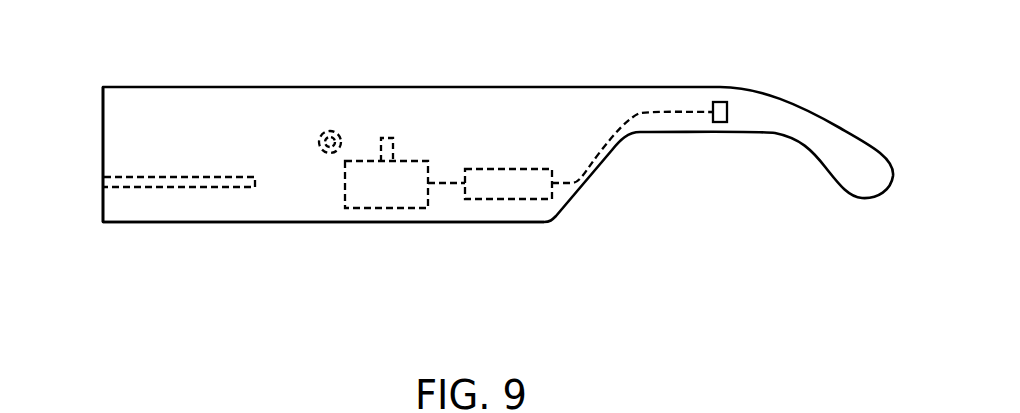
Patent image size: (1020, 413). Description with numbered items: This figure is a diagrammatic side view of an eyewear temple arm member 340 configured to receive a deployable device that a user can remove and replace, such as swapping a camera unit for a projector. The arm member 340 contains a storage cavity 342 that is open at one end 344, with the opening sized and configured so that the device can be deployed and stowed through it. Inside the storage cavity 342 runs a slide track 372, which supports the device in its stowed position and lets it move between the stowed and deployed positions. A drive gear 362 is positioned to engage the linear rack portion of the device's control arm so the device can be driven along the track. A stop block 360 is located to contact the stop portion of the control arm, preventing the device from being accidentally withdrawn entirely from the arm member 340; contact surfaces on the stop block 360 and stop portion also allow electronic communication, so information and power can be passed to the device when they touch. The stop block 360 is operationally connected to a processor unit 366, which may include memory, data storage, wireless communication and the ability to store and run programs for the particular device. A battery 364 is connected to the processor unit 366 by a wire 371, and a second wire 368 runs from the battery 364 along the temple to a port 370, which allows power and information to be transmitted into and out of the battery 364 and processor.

The arm member 340 is at (261, 87).
The open end 344 is at (103, 133).
The storage cavity 342 is at (287, 198).
The slide track 372 is at (135, 188).
The drive gear 362 is at (318, 142).
The processor unit 366 is at (386, 208).
The stop block 360 is at (393, 140).
The wire 371 is at (452, 186).
The battery 364 is at (515, 200).
The wire 368 is at (634, 118).
The port 370 is at (727, 110).